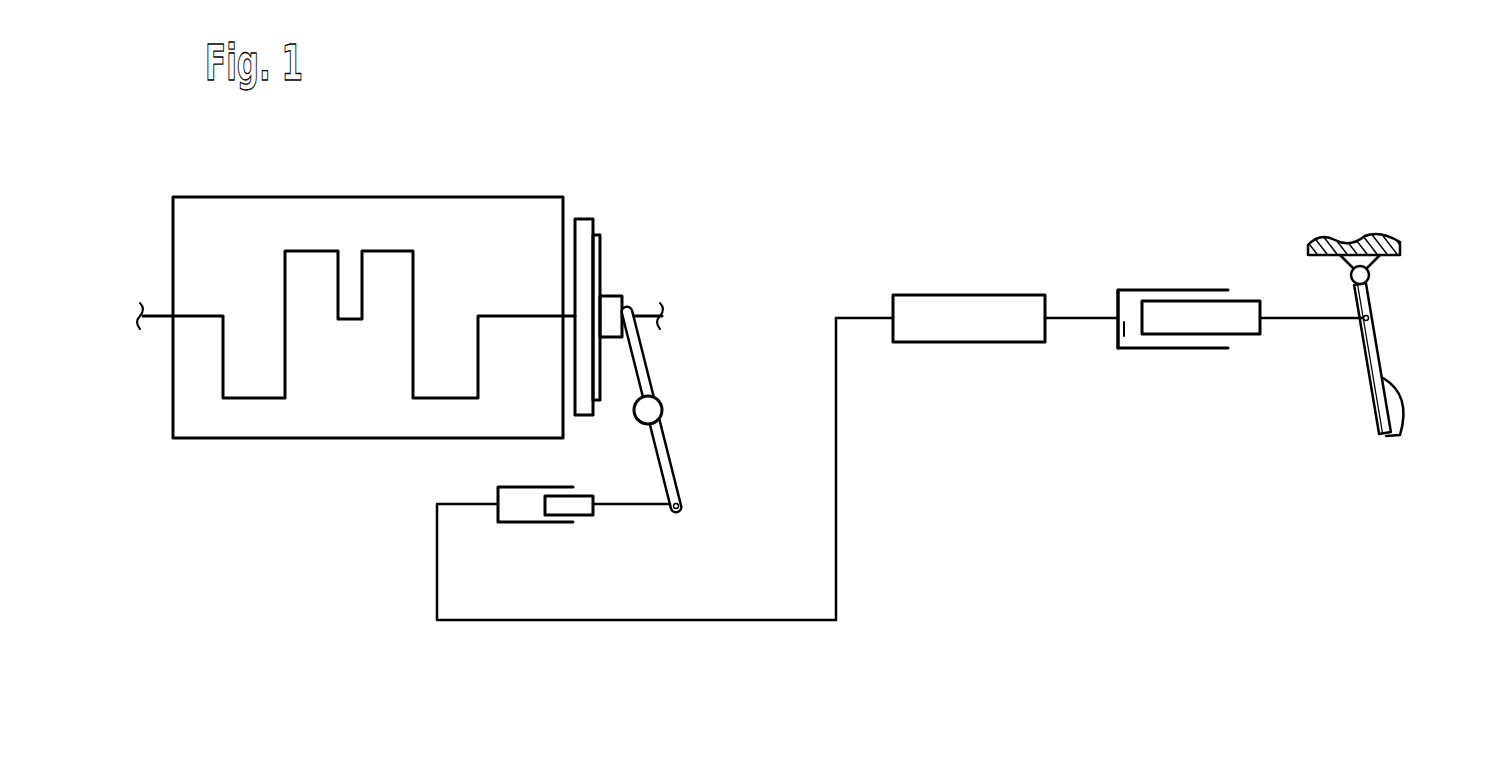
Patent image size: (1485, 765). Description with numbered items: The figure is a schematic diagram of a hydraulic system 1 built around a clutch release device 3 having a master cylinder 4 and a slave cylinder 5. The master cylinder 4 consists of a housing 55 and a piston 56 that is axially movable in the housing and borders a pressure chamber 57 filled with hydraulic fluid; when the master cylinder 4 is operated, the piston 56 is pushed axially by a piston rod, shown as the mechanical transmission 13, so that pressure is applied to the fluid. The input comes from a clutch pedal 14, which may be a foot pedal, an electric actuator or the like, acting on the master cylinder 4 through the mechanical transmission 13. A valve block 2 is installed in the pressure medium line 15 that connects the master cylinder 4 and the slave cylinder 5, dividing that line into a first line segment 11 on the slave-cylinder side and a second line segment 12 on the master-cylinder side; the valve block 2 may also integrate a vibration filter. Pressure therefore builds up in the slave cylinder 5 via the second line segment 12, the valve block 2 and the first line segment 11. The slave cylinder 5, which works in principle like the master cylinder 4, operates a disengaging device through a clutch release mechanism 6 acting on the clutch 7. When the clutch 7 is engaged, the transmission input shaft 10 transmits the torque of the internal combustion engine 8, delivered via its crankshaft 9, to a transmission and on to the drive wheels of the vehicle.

The hydraulic system 1 is at (784, 660).
The valve block 2 is at (967, 306).
The clutch release device 3 is at (1392, 323).
The master cylinder 4 is at (1185, 370).
The slave cylinder 5 is at (538, 540).
The clutch release mechanism 6 is at (685, 448).
The clutch 7 is at (612, 205).
The internal combustion engine 8 is at (505, 212).
The crankshaft 9 is at (285, 296).
The transmission input shaft 10 is at (643, 310).
The first line segment 11 is at (838, 474).
The second line segment 12 is at (1070, 315).
The mechanical transmission 13 is at (1312, 320).
The clutch pedal 14 is at (1372, 358).
The pressure medium line 15 is at (848, 300).
The housing 55 is at (1130, 288).
The piston 56 is at (1200, 315).
The pressure chamber 57 is at (1125, 327).